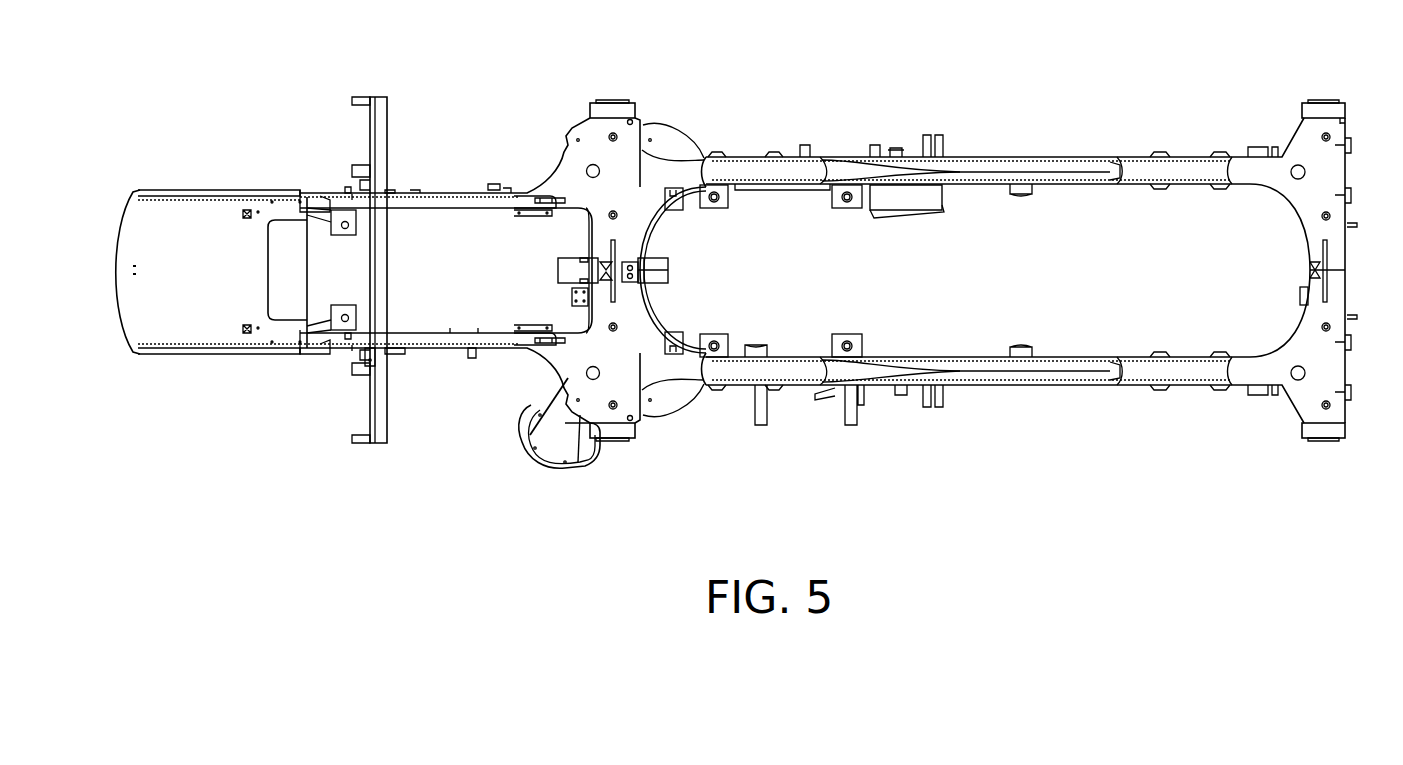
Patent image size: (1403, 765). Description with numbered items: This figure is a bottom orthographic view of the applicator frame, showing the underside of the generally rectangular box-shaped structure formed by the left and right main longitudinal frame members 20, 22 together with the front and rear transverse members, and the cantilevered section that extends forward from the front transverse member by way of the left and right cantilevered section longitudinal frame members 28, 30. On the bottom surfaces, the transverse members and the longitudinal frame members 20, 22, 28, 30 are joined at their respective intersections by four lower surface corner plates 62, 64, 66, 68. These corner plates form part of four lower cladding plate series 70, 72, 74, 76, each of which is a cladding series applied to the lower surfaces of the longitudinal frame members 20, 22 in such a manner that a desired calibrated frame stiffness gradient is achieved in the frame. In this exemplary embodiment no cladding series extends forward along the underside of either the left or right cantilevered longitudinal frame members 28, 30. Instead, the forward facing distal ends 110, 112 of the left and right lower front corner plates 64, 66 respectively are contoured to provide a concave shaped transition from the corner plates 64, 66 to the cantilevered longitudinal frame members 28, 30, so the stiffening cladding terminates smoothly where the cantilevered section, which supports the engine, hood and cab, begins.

The left main longitudinal frame member 20 is at (986, 170).
The right main longitudinal frame member 22 is at (968, 362).
The left cantilevered section longitudinal frame member 28 is at (343, 200).
The right cantilevered section longitudinal frame member 30 is at (337, 344).
The lower surface corner plate 62 is at (1333, 171).
The left lower front corner plate 64 is at (643, 142).
The right lower front corner plate 66 is at (643, 396).
The lower surface corner plate 68 is at (1333, 367).
The lower cladding plate series 70 is at (1353, 83).
The lower cladding plate series 72 is at (908, 83).
The lower cladding plate series 74 is at (908, 472).
The lower cladding plate series 76 is at (1353, 472).
The forward facing distal end 110 is at (521, 204).
The forward facing distal end 112 is at (518, 341).